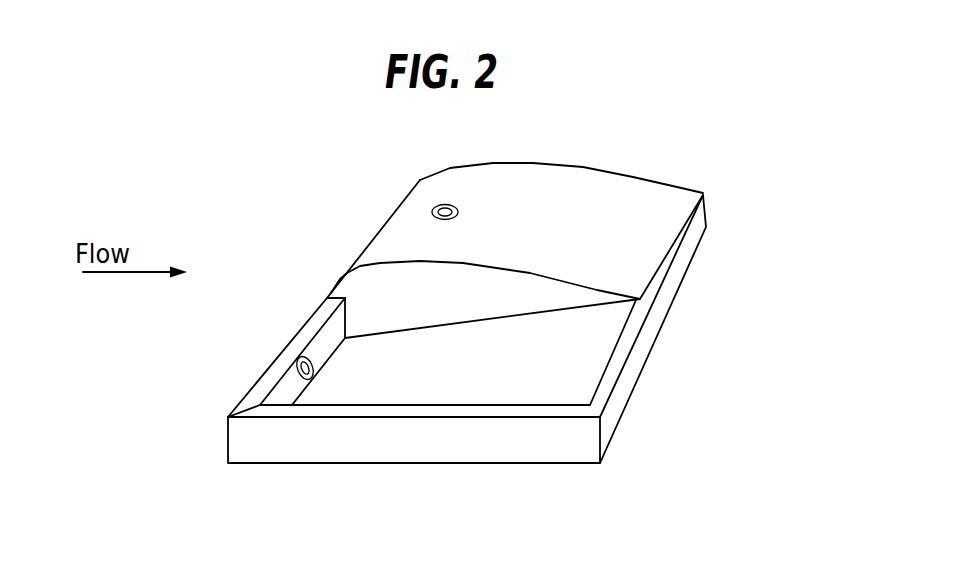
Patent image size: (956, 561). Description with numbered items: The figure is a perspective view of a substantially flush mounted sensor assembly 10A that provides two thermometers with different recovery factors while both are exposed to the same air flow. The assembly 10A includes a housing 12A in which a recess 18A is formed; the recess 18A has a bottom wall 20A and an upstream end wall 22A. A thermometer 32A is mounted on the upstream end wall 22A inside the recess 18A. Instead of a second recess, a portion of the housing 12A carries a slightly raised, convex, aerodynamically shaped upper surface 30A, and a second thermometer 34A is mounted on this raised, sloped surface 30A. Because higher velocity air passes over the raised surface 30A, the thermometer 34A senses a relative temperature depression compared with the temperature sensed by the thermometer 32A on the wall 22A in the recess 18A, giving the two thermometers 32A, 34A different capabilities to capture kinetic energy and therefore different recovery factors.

The assembly 10A is at (645, 167).
The housing 12A is at (680, 287).
The recess 18A is at (342, 392).
The bottom wall 20A is at (590, 358).
The upstream end wall 22A is at (330, 338).
The upper surface 30A is at (490, 187).
The thermometer 32A is at (308, 355).
The thermometer 34A is at (443, 204).